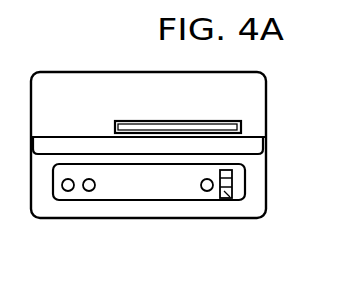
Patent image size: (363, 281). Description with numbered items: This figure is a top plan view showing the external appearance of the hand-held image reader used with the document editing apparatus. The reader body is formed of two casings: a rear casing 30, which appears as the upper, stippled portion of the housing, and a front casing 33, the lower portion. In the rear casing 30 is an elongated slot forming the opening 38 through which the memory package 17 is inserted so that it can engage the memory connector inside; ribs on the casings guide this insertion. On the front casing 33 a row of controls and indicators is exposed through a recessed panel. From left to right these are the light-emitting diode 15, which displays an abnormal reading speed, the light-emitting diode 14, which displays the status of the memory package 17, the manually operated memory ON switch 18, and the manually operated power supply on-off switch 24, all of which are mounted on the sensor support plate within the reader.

The rear casing 30 is at (70, 87).
The front casing 33 is at (266, 182).
The memory package 17 is at (228, 121).
The opening 38 is at (239, 124).
The light-emitting diode 15 is at (68, 191).
The light-emitting diode 14 is at (89, 191).
The memory ON switch 18 is at (206, 193).
The power supply on-off switch 24 is at (229, 198).